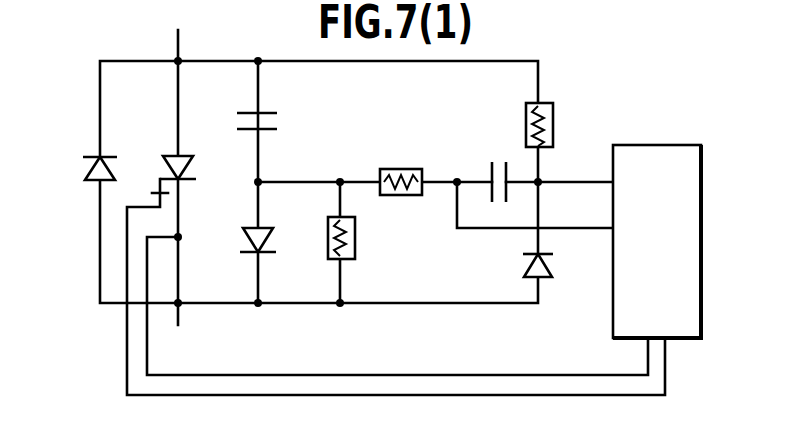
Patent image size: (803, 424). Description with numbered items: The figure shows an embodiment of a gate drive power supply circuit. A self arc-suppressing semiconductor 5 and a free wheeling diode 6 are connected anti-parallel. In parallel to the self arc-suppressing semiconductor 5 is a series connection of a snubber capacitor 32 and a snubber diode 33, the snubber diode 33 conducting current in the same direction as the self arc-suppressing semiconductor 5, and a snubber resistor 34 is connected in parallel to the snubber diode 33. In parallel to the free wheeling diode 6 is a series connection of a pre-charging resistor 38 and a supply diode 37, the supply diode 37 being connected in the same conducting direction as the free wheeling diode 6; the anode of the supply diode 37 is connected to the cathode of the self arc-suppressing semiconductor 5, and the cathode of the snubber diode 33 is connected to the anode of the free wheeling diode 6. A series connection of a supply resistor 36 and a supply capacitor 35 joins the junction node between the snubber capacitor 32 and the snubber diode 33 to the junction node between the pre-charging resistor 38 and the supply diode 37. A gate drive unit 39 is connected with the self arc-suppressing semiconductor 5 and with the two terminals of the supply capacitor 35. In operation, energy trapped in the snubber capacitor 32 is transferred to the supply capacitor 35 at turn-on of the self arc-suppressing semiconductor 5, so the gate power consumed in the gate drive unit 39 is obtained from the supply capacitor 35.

The self arc-suppressing semiconductor 5 is at (163, 165).
The free wheeling diode 6 is at (83, 168).
The snubber capacitor 32 is at (268, 121).
The snubber diode 33 is at (274, 248).
The snubber resistor 34 is at (358, 229).
The supply capacitor 35 is at (507, 137).
The supply resistor 36 is at (388, 168).
The supply diode 37 is at (527, 259).
The pre-charging resistor 38 is at (557, 127).
The gate drive unit 39 is at (660, 145).